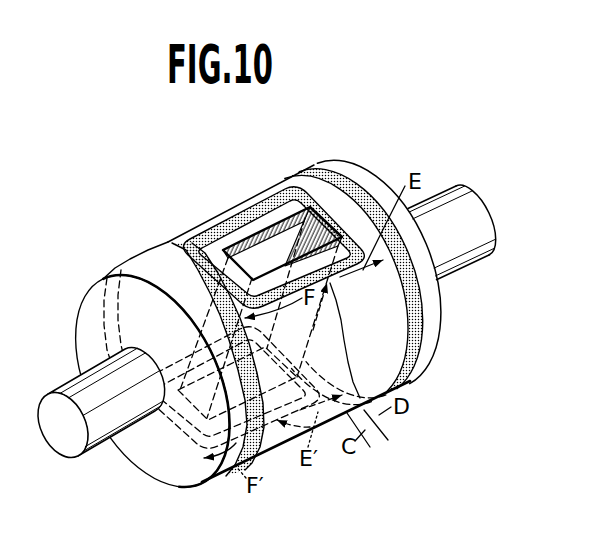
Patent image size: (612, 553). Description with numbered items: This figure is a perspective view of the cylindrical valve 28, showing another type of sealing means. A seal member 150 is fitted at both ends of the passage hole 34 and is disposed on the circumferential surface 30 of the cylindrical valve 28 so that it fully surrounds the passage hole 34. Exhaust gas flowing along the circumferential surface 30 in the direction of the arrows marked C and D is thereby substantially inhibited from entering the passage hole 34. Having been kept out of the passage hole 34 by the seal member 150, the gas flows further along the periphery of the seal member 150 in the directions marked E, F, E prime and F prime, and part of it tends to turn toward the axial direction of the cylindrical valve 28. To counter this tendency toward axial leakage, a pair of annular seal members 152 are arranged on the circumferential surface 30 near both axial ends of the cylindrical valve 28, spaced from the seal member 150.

The cylindrical valve 28 is at (177, 198).
The circumferential surface 30 is at (431, 327).
The passage hole 34 is at (283, 245).
The seal member 150 is at (240, 220).
The annular seal member 152 is at (162, 252).